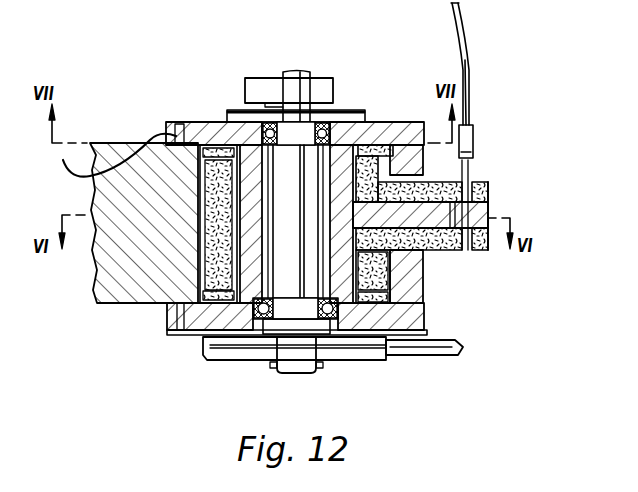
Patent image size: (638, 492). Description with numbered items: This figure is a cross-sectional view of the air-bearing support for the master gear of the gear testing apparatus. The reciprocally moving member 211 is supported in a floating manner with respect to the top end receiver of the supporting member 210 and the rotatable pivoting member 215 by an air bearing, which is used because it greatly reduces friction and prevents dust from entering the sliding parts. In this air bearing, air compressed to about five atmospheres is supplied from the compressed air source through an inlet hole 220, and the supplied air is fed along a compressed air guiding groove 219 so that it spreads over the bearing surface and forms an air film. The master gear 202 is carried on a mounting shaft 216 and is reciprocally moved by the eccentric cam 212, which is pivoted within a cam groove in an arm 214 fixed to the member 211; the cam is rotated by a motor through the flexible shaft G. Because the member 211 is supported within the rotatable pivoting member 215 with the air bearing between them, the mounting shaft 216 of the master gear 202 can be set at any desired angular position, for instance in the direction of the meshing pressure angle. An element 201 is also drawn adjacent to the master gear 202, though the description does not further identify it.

The output arm 201 is at (432, 356).
The master gear 202 is at (230, 362).
The supporting member 210 is at (120, 143).
The reciprocally moving member 211 is at (216, 122).
The eccentric cam 212 is at (492, 202).
The arm 214 is at (432, 220).
The rotatable pivoting member 215 is at (378, 163).
The mounting shaft 216 is at (292, 74).
The compressed air guiding groove 219 is at (101, 155).
The inlet hole 220 is at (180, 122).
The flexible shaft G is at (466, 56).